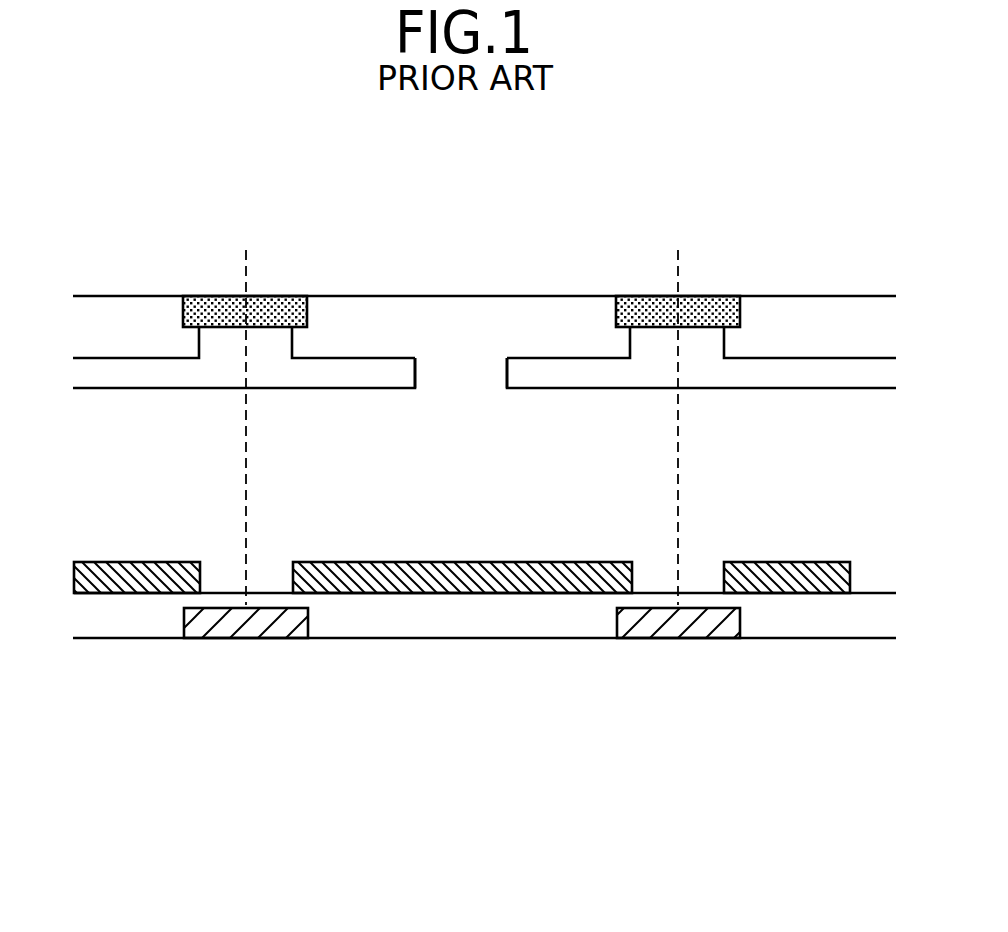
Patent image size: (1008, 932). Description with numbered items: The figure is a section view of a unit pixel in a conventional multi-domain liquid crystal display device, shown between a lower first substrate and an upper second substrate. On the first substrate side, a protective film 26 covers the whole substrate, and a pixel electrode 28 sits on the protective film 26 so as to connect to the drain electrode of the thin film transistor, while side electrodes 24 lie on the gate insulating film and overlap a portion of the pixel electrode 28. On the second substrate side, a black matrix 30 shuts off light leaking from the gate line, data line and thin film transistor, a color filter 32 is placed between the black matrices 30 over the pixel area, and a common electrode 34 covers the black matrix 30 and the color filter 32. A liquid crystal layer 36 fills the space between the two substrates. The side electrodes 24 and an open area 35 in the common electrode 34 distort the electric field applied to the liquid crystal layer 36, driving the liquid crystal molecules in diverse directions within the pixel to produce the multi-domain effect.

The side electrodes 24 is at (628, 625).
The protective film 26 is at (377, 621).
The pixel electrode 28 is at (620, 565).
The black matrix 30 is at (278, 298).
The color filter 32 is at (459, 308).
The common electrode 34 is at (723, 382).
The open area 35 is at (465, 376).
The liquid crystal layer 36 is at (424, 487).